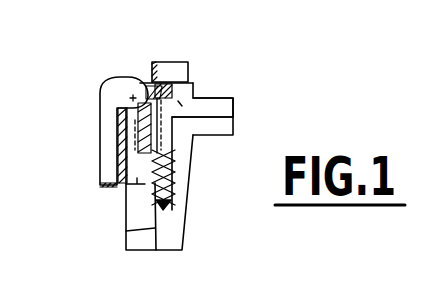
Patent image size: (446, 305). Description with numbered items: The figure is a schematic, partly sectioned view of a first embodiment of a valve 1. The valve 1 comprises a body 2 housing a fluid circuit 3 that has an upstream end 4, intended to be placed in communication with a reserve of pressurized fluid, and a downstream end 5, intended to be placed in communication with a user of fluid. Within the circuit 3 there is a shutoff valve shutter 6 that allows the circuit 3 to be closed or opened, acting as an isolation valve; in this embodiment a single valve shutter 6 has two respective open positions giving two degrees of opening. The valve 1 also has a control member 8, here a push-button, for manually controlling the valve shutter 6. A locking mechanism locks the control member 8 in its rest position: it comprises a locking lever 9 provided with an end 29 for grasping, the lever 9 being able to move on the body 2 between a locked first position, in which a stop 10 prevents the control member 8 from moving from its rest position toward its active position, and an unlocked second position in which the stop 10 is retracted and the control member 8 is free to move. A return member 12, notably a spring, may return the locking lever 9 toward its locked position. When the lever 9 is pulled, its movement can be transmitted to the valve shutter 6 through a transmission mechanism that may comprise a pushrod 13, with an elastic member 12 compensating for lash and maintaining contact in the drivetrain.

The valve 1 is at (250, 121).
The body 2 is at (179, 216).
The fluid circuit 3 is at (125, 237).
The upstream end 4 is at (150, 260).
The downstream end 5 is at (244, 104).
The shutoff valve shutter 6 is at (185, 184).
The control member 8 is at (175, 61).
The locking lever 9 is at (96, 163).
The stop 10 is at (152, 62).
The return member 12 is at (113, 186).
The pushrod 13 is at (177, 106).
The end for grasping 29 is at (96, 188).